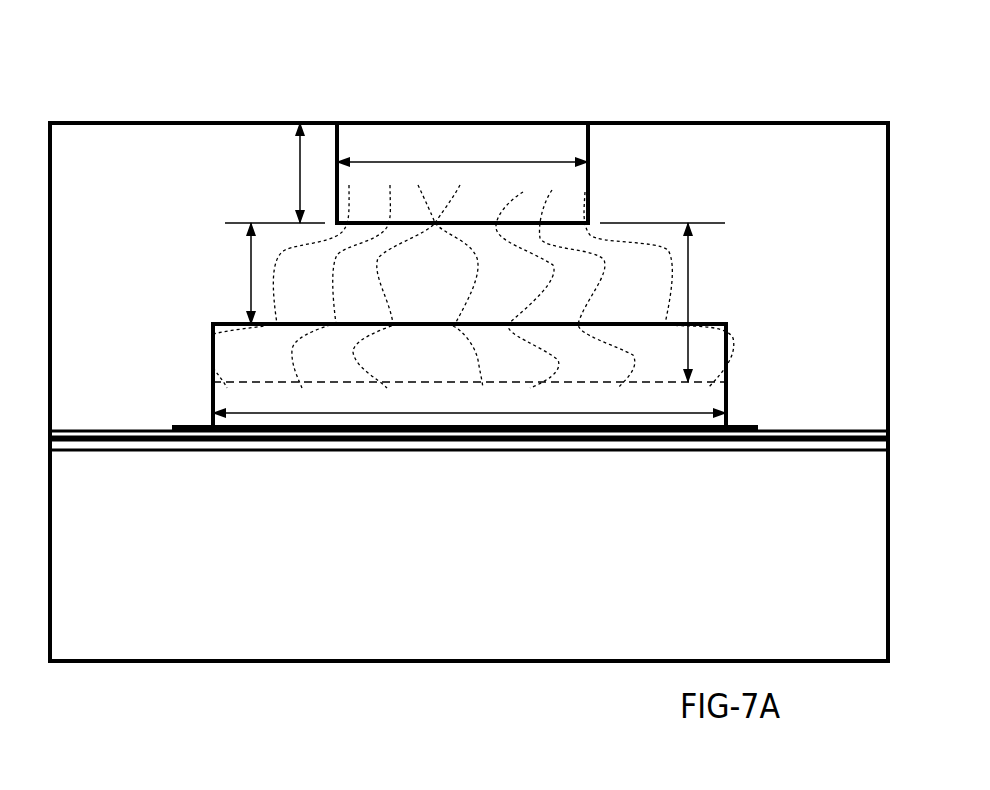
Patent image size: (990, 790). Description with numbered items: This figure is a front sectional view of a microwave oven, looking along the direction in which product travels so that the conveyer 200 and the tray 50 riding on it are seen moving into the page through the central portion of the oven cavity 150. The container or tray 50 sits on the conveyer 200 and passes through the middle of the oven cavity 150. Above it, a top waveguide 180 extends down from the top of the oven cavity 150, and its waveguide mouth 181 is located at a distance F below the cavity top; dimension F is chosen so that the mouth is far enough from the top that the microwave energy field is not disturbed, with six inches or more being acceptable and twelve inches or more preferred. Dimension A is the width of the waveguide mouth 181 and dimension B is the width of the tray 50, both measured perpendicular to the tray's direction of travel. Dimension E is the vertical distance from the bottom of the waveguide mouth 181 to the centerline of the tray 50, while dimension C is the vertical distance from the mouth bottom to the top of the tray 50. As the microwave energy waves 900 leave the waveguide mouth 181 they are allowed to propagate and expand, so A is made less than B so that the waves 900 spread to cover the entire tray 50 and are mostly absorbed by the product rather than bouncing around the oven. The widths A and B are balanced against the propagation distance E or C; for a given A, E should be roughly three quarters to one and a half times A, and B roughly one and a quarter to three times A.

The tray 50 is at (210, 322).
The oven cavity 150 is at (806, 185).
The top waveguide 180 is at (487, 135).
The waveguide mouth 181 is at (514, 220).
The conveyer 200 is at (752, 420).
The microwave energy waves 900 is at (540, 300).
The width of the waveguide mouth A is at (437, 160).
The width of the tray B is at (385, 414).
The vertical distance from waveguide mouth to top of tray C is at (246, 272).
The vertical distance from waveguide mouth to tray centerline E is at (692, 298).
The distance from top of oven cavity to waveguide mouth F is at (298, 185).